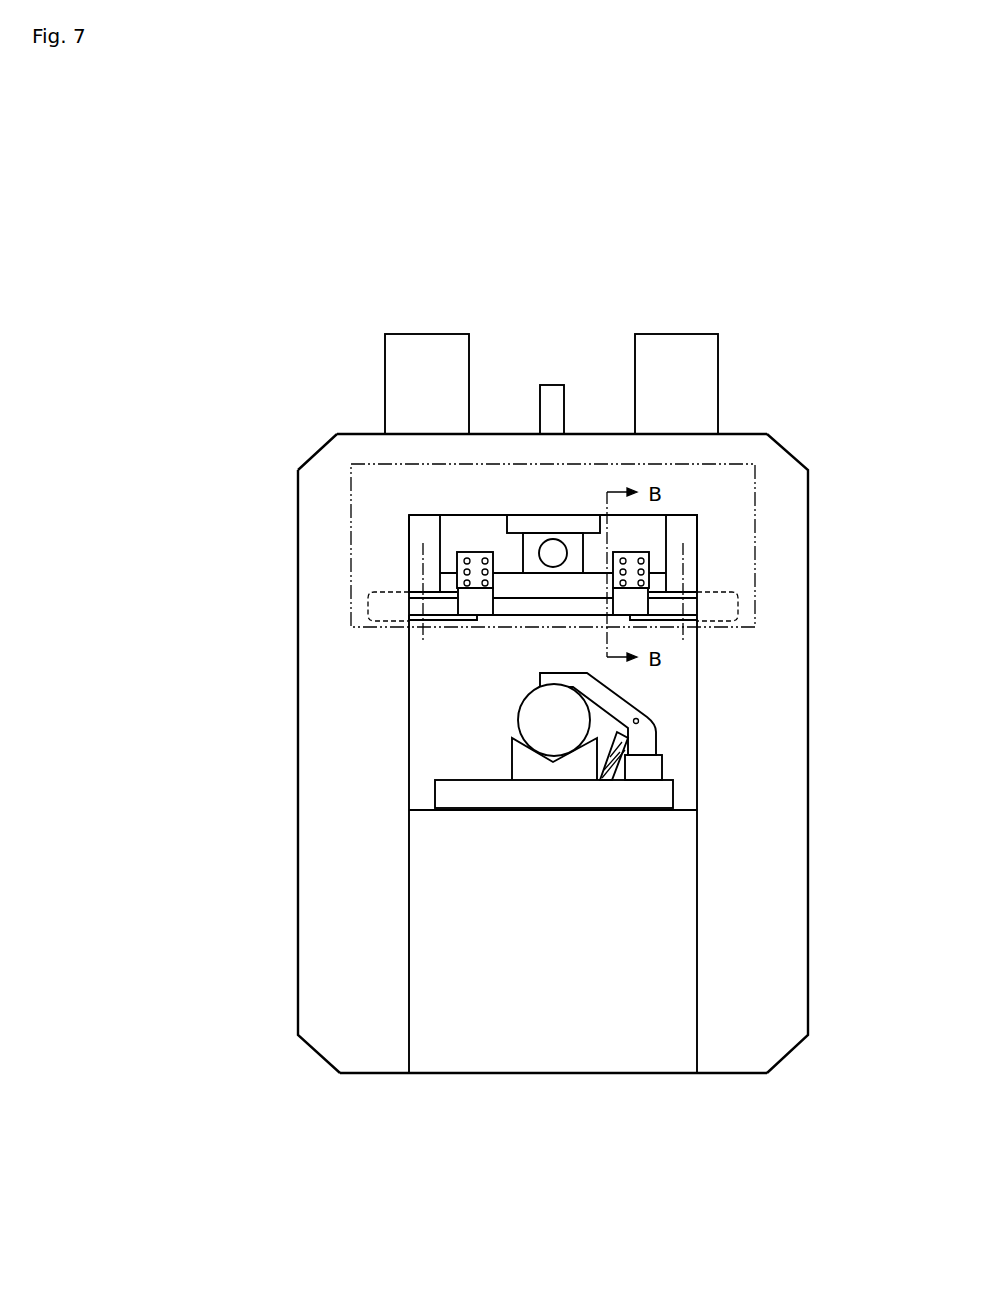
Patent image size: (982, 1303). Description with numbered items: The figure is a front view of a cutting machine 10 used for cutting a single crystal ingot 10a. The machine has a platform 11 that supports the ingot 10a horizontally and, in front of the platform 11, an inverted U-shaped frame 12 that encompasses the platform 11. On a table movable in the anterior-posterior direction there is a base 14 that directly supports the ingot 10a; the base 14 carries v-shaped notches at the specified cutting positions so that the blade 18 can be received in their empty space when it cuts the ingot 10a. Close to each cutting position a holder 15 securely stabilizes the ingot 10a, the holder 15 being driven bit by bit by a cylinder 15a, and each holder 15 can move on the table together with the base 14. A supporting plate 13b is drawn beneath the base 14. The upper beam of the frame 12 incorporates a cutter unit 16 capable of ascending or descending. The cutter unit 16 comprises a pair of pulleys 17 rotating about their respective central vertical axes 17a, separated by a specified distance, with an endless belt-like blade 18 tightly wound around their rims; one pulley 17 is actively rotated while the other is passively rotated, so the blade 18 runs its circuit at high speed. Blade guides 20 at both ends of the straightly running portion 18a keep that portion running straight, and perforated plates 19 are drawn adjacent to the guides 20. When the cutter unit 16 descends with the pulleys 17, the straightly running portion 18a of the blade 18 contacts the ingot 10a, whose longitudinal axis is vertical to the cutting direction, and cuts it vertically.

The cutting machine 10 is at (308, 1064).
The ingot 10a is at (518, 720).
The platform 11 is at (560, 1057).
The inverted U-shaped frame 12 is at (757, 843).
The support plate 13b is at (435, 790).
The base 14 is at (512, 760).
The holder 15 is at (657, 737).
The cylinder 15a is at (662, 765).
The cutter unit 16 is at (755, 545).
The pulley 17 is at (386, 592).
The central vertical axis 17a is at (423, 563).
The blade 18 is at (740, 602).
The straightly running portion 18a is at (583, 610).
The perforated plate 19 is at (475, 550).
The blade guide 20 is at (476, 605).